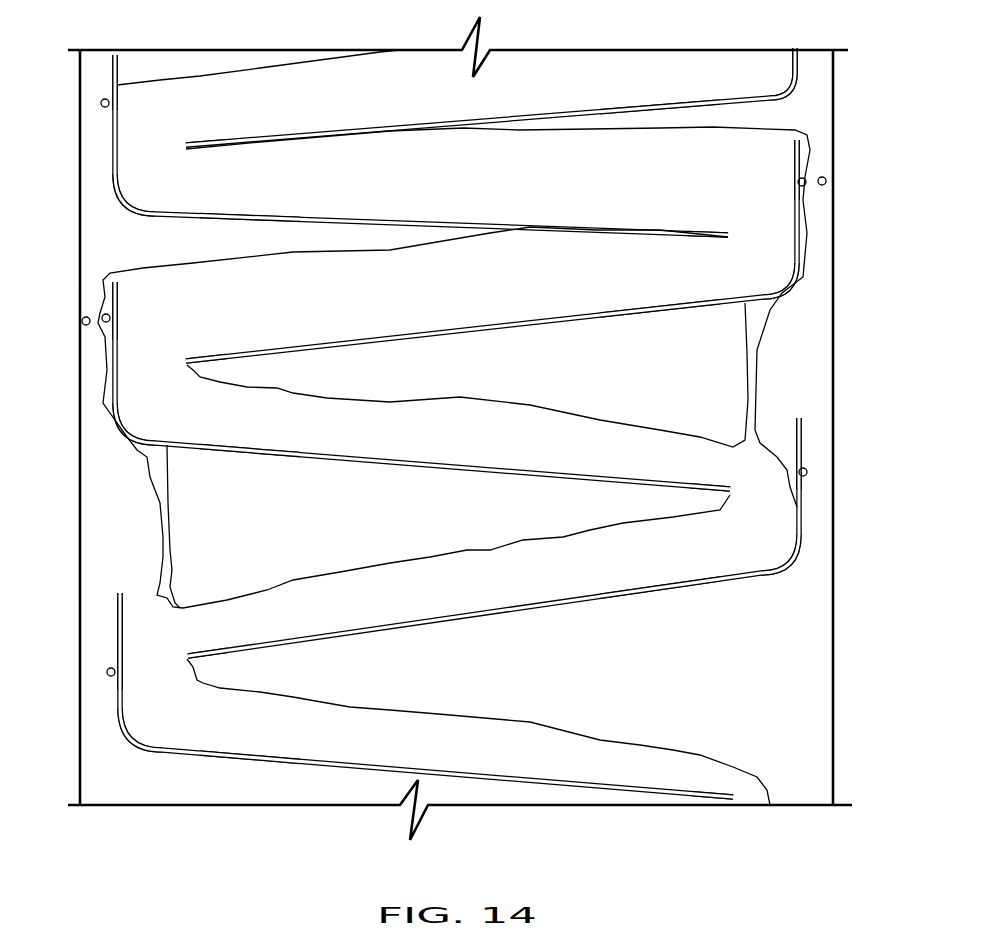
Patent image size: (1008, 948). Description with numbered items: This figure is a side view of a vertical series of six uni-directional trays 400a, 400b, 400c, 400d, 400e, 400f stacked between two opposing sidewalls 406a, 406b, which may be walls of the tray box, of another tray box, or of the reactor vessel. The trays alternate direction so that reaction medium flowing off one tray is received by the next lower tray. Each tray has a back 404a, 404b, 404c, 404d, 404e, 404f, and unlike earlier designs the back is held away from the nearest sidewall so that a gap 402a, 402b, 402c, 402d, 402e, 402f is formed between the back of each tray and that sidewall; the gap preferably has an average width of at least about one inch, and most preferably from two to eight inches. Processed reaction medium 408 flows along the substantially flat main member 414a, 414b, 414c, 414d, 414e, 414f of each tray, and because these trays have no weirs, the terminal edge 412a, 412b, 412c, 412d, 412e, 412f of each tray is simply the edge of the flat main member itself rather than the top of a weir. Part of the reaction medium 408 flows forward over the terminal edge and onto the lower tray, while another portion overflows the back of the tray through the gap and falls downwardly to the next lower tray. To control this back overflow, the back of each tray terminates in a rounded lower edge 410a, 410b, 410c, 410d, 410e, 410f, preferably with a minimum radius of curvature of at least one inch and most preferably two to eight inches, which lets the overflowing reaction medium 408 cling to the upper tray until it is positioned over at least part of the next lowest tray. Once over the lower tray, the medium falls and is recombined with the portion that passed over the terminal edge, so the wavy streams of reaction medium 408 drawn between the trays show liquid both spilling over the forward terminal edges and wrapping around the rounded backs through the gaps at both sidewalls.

The uni-directional tray 400a is at (385, 122).
The uni-directional tray 400b is at (345, 216).
The uni-directional tray 400c is at (385, 333).
The uni-directional tray 400d is at (345, 456).
The uni-directional tray 400e is at (385, 626).
The uni-directional tray 400f is at (348, 765).
The gap 402a is at (813, 53).
The gap 402b is at (97, 108).
The gap 402c is at (813, 173).
The gap 402d is at (97, 324).
The gap 402e is at (817, 465).
The gap 402f is at (103, 680).
The back of tray 404a is at (805, 50).
The back of tray 404b is at (119, 103).
The back of tray 404c is at (793, 182).
The back of tray 404d is at (119, 318).
The back of tray 404e is at (795, 471).
The back of tray 404f is at (125, 672).
The sidewall 406a is at (81, 320).
The sidewall 406b is at (827, 181).
The processed reaction medium 408 is at (527, 130).
The rounded lower edge 410a is at (778, 88).
The rounded lower edge 410b is at (130, 212).
The rounded lower edge 410c is at (780, 306).
The rounded lower edge 410d is at (132, 438).
The rounded lower edge 410e is at (785, 574).
The rounded lower edge 410f is at (137, 748).
The terminal edge 412a is at (188, 147).
The terminal edge 412b is at (726, 239).
The terminal edge 412c is at (188, 362).
The terminal edge 412d is at (730, 494).
The terminal edge 412e is at (189, 657).
The terminal edge 412f is at (728, 803).
The substantially flat main member 414a is at (662, 106).
The substantially flat main member 414b is at (245, 218).
The substantially flat main member 414c is at (667, 308).
The substantially flat main member 414d is at (245, 450).
The substantially flat main member 414e is at (670, 592).
The substantially flat main member 414f is at (250, 758).